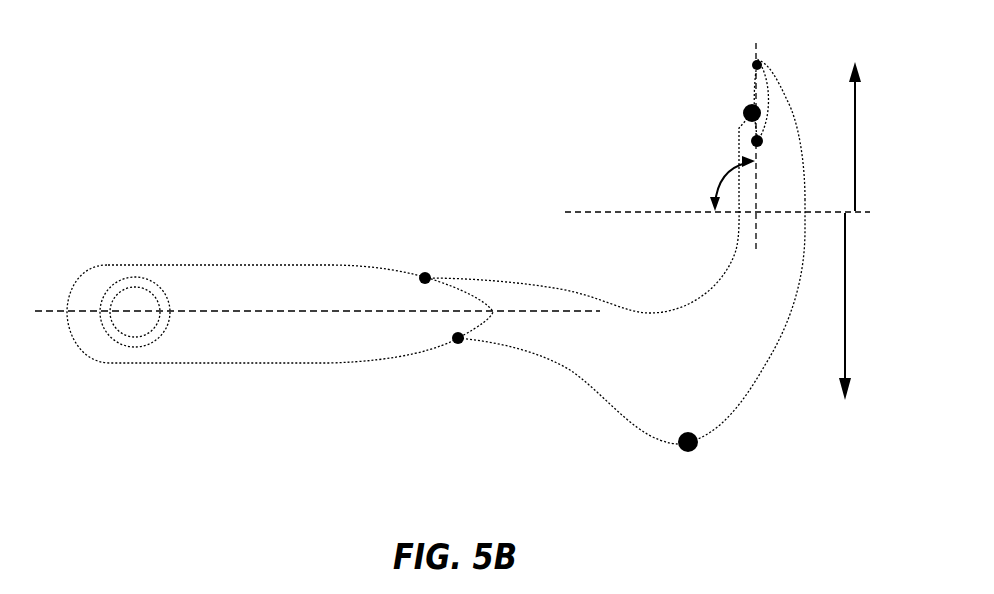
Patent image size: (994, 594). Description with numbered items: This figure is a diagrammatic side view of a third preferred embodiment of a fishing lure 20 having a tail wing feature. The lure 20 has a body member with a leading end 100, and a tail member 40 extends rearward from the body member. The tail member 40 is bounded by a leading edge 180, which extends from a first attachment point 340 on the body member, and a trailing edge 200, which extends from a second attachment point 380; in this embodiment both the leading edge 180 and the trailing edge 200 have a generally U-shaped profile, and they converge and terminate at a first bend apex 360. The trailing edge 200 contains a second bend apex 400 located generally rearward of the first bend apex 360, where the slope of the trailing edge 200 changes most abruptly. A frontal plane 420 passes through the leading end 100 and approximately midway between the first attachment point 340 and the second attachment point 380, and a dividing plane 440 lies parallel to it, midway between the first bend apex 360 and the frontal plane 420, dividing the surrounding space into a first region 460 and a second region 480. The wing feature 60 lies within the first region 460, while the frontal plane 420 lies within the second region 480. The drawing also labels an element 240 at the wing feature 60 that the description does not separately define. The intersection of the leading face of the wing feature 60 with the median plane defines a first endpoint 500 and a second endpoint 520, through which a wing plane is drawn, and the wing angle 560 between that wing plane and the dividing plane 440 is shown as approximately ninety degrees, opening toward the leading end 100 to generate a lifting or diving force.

The fishing lure 20 is at (316, 128).
The leading end 100 is at (83, 298).
The first attachment point 340 is at (427, 272).
The second attachment point 380 is at (457, 345).
The frontal plane 420 is at (586, 215).
The leading edge 180 is at (622, 310).
The trailing edge 200 is at (645, 342).
The tail member 40 is at (613, 397).
The second bend apex 400 is at (690, 447).
The wing feature 60 is at (773, 70).
The needle 240 is at (778, 93).
The second endpoint 520 is at (755, 65).
The first bend apex 360 is at (745, 113).
The first endpoint 500 is at (752, 142).
The dividing plane 440 is at (590, 212).
The wing angle 560 is at (718, 184).
The first region 460 is at (855, 139).
The second region 480 is at (845, 357).